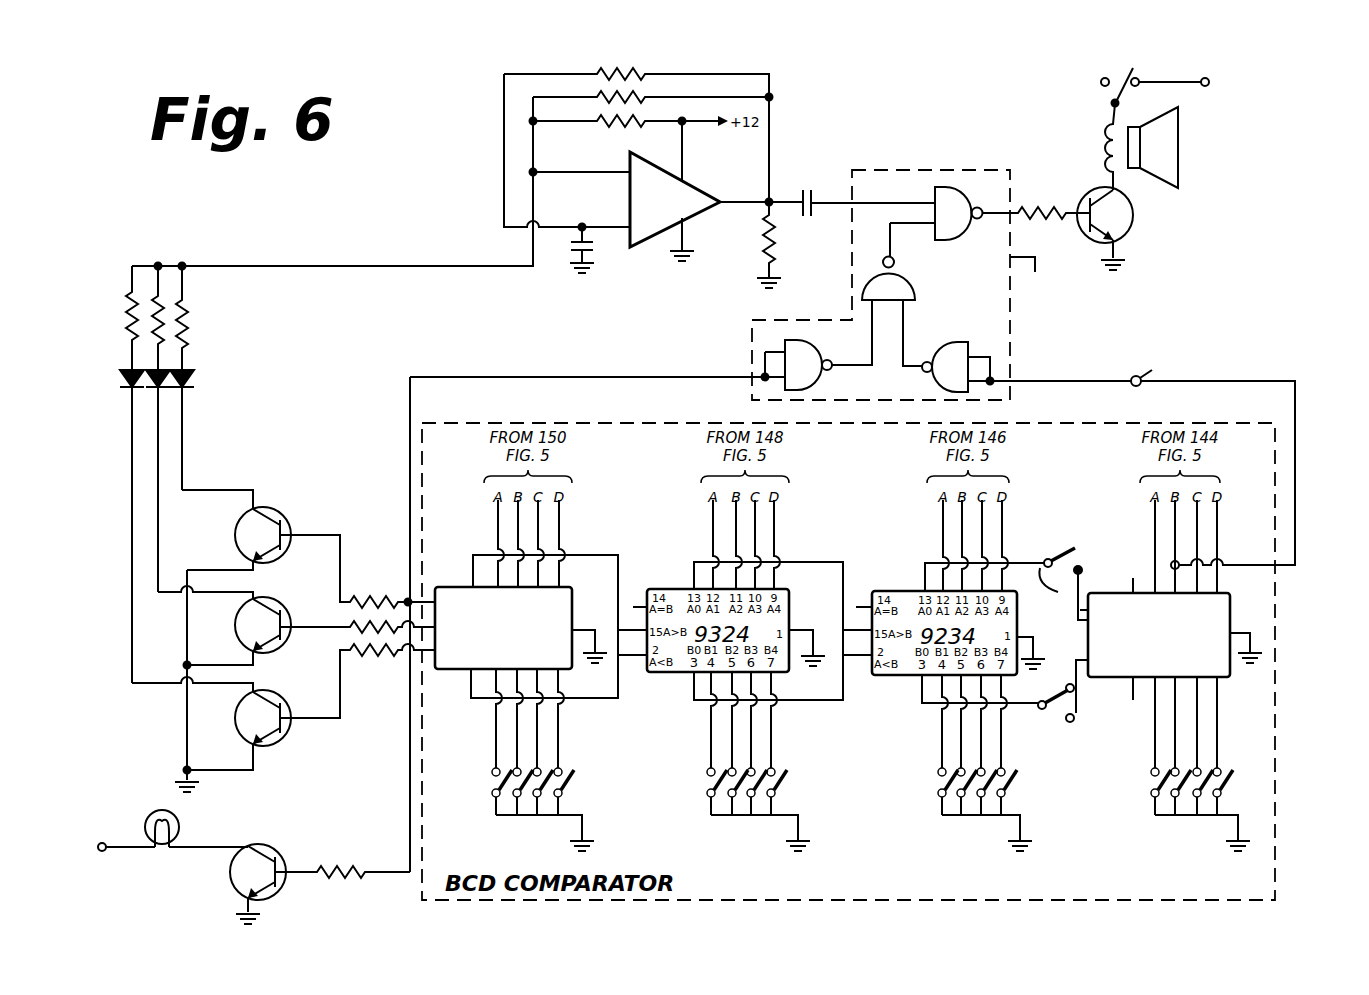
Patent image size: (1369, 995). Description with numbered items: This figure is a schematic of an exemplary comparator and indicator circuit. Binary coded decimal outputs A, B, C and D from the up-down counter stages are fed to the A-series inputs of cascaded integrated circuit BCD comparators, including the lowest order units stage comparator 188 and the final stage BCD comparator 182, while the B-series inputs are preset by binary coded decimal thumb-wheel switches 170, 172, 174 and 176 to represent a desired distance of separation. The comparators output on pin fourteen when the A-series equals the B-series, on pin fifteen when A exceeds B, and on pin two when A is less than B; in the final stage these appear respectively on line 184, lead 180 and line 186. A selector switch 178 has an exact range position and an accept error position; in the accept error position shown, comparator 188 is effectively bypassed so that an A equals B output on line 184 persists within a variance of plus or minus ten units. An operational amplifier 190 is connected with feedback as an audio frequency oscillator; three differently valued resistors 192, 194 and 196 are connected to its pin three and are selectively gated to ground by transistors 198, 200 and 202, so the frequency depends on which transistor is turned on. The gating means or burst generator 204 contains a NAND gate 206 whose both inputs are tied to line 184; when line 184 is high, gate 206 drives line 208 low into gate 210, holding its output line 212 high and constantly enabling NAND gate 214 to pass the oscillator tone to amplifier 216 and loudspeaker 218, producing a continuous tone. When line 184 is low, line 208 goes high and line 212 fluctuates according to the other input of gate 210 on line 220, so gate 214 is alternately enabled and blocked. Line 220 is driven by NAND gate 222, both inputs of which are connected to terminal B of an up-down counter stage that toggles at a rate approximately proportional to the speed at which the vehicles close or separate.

The binary coded decimal thumb-wheel switch 170 is at (1148, 790).
The binary coded decimal thumb-wheel switch 172 is at (934, 787).
The binary coded decimal thumb-wheel switch 174 is at (704, 784).
The binary coded decimal thumb-wheel switch 176 is at (488, 780).
The selector switch 178 is at (1046, 559).
The lead 180 is at (423, 640).
The final stage BCD comparator integrated circuit 182 is at (577, 603).
The line 184 is at (424, 595).
The line 186 is at (400, 652).
The low order stage comparator 188 is at (1230, 677).
The operational amplifier 190 is at (696, 184).
The resistor 192 is at (130, 298).
The resistor 194 is at (188, 318).
The resistor 196 is at (163, 298).
The transistor 198 is at (278, 706).
The transistor 200 is at (273, 512).
The transistor 202 is at (278, 611).
The burst generator 204 is at (1105, 287).
The NAND gate 206 is at (798, 350).
The line 208 is at (870, 356).
The gate 210 is at (915, 288).
The line 212 is at (898, 233).
The NAND gate 214 is at (953, 188).
The amplifier 216 is at (1138, 215).
The loudspeaker 218 is at (1192, 120).
The line 220 is at (905, 333).
The NAND gate 222 is at (985, 353).